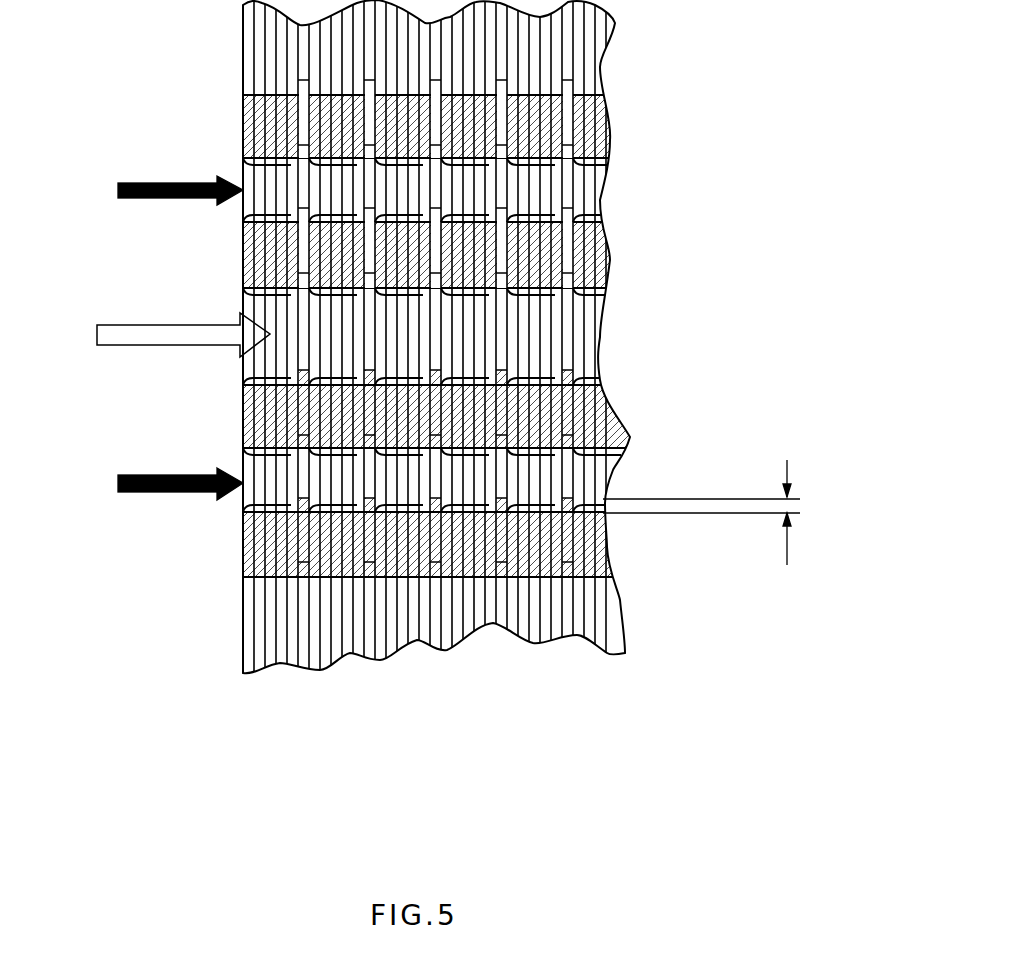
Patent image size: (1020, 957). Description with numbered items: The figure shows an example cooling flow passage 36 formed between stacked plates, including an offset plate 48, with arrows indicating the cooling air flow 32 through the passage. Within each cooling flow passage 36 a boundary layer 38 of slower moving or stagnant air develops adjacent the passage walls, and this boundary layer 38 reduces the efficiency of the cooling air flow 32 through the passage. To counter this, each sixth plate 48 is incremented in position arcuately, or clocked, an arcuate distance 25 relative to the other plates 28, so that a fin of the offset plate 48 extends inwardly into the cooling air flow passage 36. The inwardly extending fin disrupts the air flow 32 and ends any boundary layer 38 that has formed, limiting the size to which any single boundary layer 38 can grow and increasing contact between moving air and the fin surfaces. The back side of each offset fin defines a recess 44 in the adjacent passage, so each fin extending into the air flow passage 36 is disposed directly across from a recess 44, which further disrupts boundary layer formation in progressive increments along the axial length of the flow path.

The arcuate distance 25 is at (739, 530).
The plates 28 is at (400, 632).
The fluid flow 32 is at (118, 190).
The cooling flow passage 36 is at (222, 211).
The boundary layer 38 is at (243, 163).
The recess 44 is at (567, 157).
The plate 48 is at (303, 617).